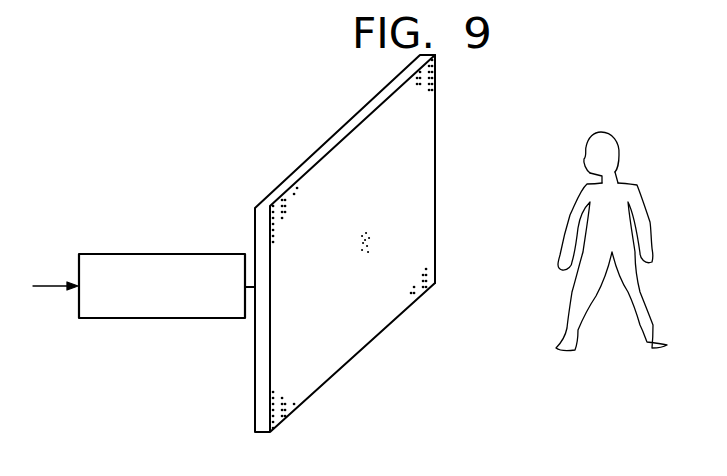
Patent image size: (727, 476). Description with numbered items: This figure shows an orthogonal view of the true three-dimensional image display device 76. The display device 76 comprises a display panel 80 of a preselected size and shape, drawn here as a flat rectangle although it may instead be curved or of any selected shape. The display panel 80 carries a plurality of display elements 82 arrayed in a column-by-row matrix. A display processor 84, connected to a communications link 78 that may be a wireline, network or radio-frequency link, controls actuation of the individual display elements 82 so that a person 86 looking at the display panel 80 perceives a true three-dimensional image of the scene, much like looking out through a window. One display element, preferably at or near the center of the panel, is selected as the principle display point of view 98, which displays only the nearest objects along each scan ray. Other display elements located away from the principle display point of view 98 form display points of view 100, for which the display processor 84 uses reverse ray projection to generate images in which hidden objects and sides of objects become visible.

The true three-dimensional image display device 76 is at (266, 147).
The communications link 78 is at (52, 289).
The display panel 80 is at (436, 150).
The display elements 82 is at (300, 193).
The display processor 84 is at (183, 254).
The person 86 is at (641, 164).
The principle display point of view 98 is at (372, 236).
The display points of view 100 is at (306, 221).